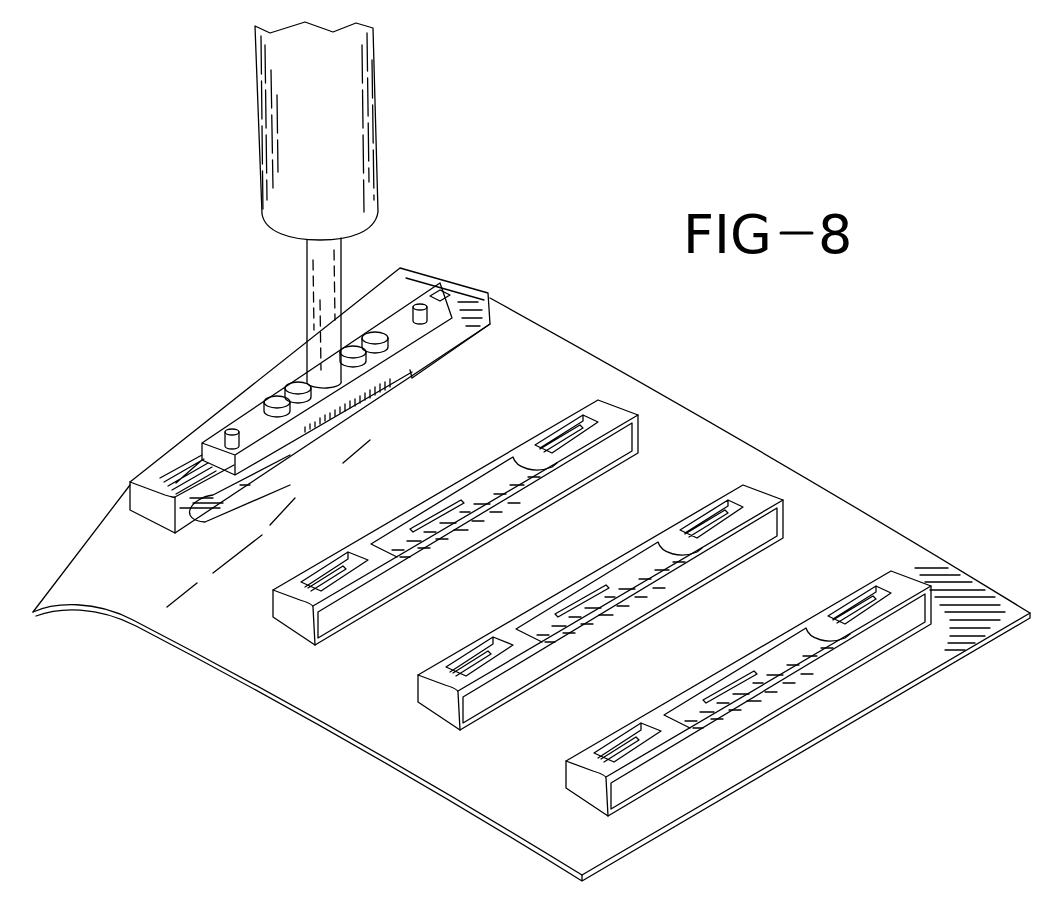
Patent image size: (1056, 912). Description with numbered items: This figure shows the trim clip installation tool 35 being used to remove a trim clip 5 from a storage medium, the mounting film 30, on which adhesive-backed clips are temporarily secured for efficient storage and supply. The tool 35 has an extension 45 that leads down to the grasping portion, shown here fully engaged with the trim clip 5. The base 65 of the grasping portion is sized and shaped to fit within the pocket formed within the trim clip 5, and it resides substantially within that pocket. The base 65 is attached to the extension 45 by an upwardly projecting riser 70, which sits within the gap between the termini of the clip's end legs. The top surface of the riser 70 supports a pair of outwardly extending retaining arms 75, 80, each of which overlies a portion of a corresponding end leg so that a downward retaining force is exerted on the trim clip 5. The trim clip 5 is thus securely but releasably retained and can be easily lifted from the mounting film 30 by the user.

The trim clip 5 is at (310, 354).
The mounting film 30 is at (93, 552).
The trim clip installation tool 35 is at (388, 132).
The extension 45 is at (320, 290).
The base 65 is at (255, 488).
The riser 70 is at (357, 415).
The retaining arm 75 is at (253, 423).
The retaining arm 80 is at (403, 320).